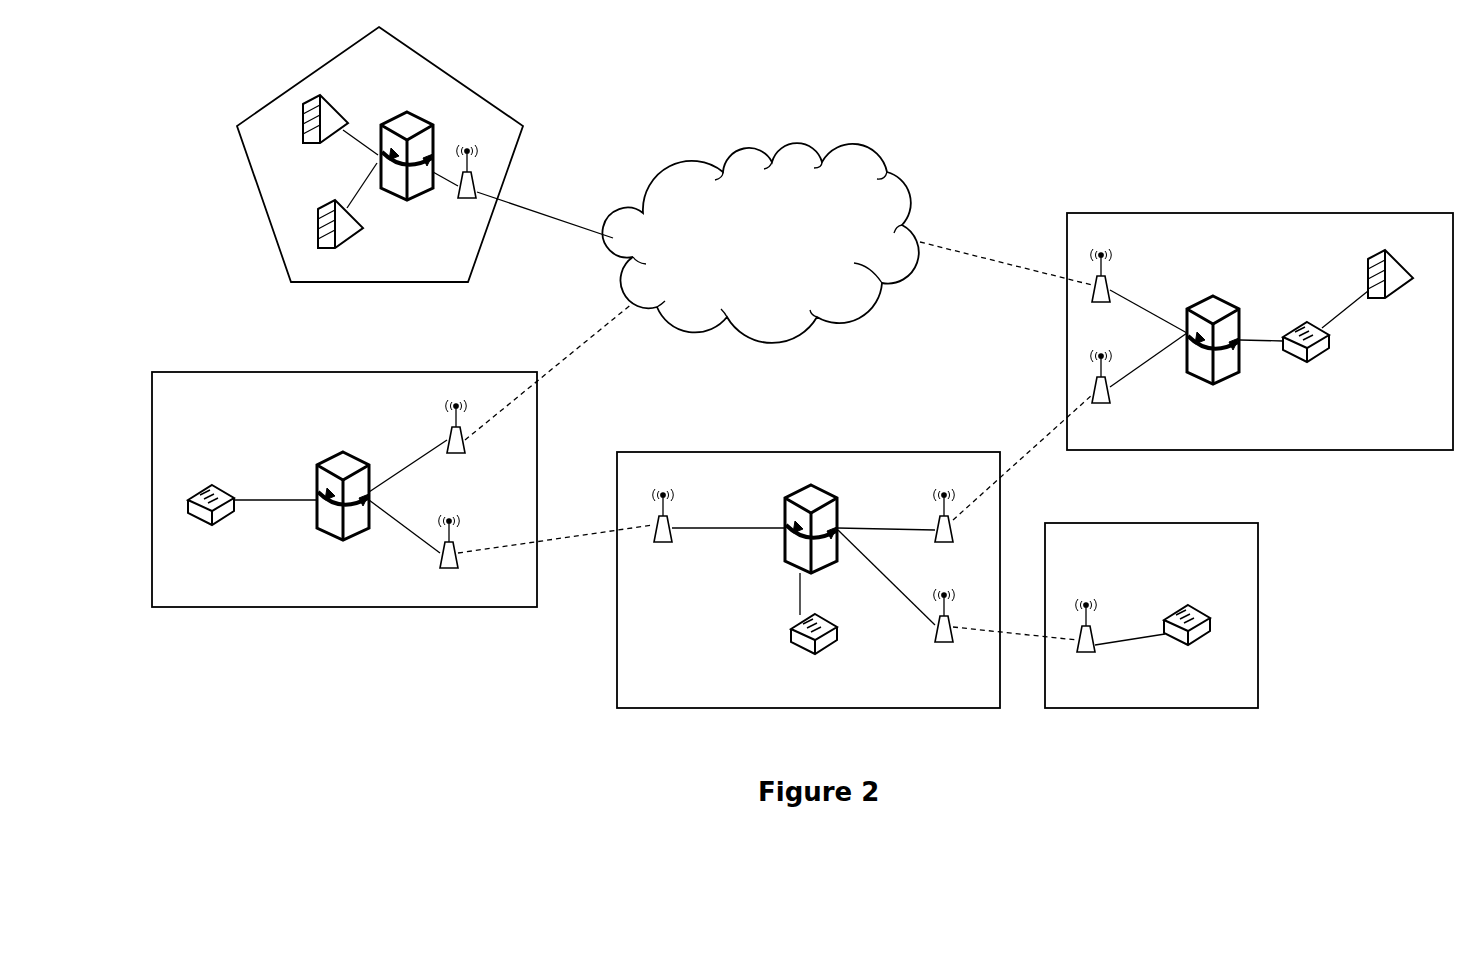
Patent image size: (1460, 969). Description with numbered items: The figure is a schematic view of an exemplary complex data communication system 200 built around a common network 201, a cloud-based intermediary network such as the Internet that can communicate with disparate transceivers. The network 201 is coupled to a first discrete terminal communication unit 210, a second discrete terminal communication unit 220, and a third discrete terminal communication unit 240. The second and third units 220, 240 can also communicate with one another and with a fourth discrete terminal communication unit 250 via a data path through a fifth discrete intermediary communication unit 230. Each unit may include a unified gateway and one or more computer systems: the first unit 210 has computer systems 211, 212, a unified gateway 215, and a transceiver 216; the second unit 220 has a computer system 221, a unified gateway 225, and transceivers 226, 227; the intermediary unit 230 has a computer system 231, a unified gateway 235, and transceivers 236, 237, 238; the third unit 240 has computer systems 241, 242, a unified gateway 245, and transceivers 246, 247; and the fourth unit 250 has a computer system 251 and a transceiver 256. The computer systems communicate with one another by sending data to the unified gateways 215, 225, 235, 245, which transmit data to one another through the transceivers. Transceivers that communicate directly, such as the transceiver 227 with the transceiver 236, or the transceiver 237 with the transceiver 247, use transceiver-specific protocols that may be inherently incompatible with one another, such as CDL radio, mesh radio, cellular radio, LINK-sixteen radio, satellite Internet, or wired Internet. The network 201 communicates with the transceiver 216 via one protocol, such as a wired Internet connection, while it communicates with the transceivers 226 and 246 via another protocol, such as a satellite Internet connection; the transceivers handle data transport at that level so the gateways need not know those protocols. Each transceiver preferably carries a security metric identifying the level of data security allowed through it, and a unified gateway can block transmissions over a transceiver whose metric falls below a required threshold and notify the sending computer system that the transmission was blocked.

The complex data communication system 200 is at (160, 81).
The common network 201 is at (760, 256).
The first discrete terminal communication unit 210 is at (380, 167).
The computer system 211 is at (325, 131).
The computer system 212 is at (340, 236).
The unified gateway 215 is at (407, 169).
The transceiver 216 is at (466, 186).
The second discrete terminal communication unit 220 is at (344, 505).
The computer system 221 is at (211, 520).
The unified gateway 225 is at (343, 508).
The transceiver 226 is at (461, 438).
The transceiver 227 is at (451, 552).
The fifth discrete intermediary communication unit 230 is at (808, 595).
The computer system 231 is at (814, 646).
The unified gateway 235 is at (815, 541).
The transceiver 236 is at (664, 527).
The transceiver 237 is at (939, 527).
The transceiver 238 is at (946, 628).
The third discrete terminal communication unit 240 is at (1260, 347).
The computer system 241 is at (1306, 352).
The computer system 242 is at (1390, 288).
The unified gateway 245 is at (1213, 353).
The transceiver 246 is at (1102, 287).
The transceiver 247 is at (1106, 388).
The fourth discrete terminal communication unit 250 is at (1151, 631).
The computer system 251 is at (1187, 640).
The transceiver 256 is at (1087, 639).